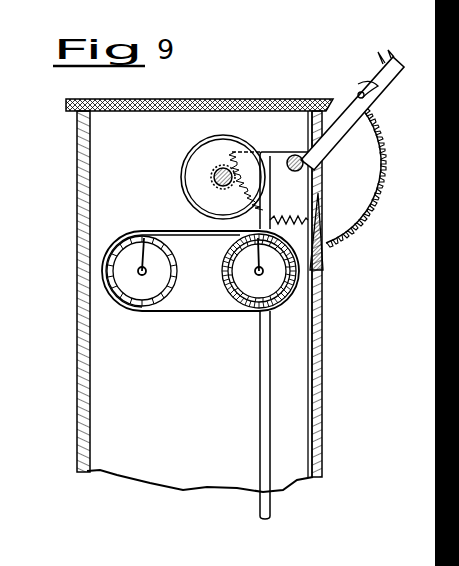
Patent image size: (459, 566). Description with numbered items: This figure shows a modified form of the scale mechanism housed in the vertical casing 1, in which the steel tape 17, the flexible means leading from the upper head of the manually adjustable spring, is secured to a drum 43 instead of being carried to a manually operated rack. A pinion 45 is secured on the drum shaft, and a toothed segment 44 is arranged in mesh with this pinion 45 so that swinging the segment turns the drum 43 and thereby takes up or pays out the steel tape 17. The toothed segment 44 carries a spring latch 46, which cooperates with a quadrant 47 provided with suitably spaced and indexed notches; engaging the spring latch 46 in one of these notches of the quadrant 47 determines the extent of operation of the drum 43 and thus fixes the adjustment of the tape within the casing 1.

The casing 1 is at (78, 292).
The steel tape 17 is at (262, 222).
The drum 43 is at (193, 172).
The toothed segment 44 is at (265, 151).
The pinion 45 is at (217, 167).
The spring latch 46 is at (357, 90).
The quadrant 47 is at (353, 215).